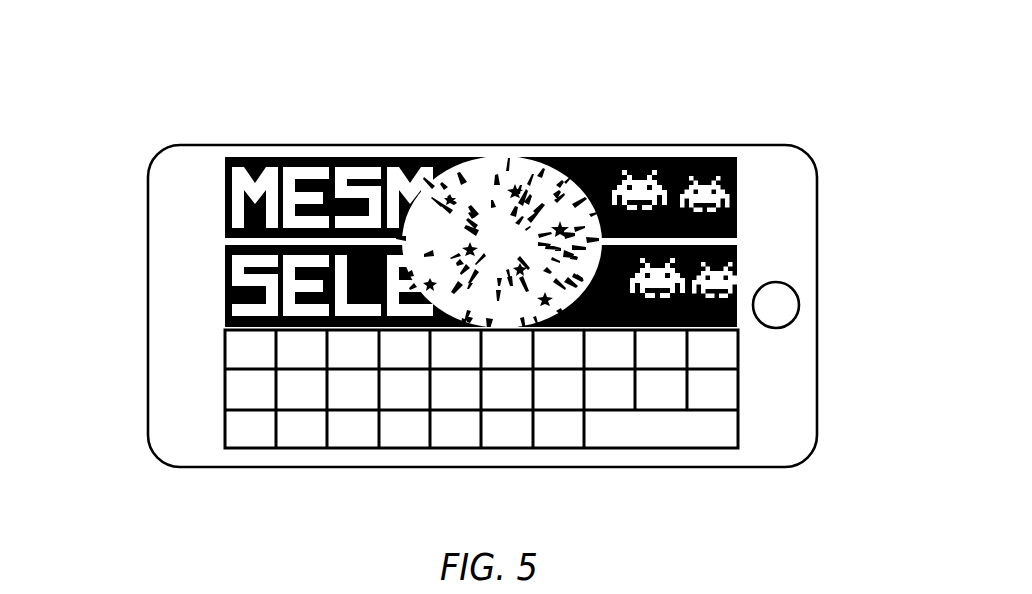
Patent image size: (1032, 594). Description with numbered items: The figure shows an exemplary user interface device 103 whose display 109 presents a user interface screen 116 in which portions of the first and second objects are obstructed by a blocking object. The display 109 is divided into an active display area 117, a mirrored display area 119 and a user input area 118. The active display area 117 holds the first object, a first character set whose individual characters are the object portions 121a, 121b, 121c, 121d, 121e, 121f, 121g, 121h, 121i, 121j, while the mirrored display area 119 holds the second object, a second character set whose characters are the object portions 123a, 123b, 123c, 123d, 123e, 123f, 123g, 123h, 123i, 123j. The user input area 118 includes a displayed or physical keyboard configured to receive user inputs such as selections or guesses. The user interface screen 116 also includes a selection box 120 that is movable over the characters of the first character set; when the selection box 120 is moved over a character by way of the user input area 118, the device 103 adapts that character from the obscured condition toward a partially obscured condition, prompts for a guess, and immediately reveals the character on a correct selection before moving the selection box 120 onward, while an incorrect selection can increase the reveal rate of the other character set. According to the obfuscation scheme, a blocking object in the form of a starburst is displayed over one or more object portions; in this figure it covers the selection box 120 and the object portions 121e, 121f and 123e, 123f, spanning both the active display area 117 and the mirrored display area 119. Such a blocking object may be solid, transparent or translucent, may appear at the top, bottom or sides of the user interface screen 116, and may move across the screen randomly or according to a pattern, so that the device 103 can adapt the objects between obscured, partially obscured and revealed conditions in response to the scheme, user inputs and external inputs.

The user interface device 103 is at (140, 83).
The display 109 is at (392, 223).
The user interface screen 116 is at (481, 242).
The active display area 117 is at (222, 280).
The user input area 118 is at (742, 388).
The mirrored display area 119 is at (222, 200).
The selection box 120 is at (379, 333).
The object portion 121a is at (270, 333).
The object portion 121b is at (320, 333).
The object portion 121c is at (362, 333).
The object portion 121d is at (417, 333).
The object portion 121e is at (473, 333).
The object portion 121f is at (529, 333).
The object portion 121g is at (572, 333).
The object portion 121h is at (626, 333).
The object portion 121i is at (680, 333).
The object portion 121j is at (726, 333).
The object portion 123a is at (258, 158).
The object portion 123b is at (313, 158).
The object portion 123c is at (360, 158).
The object portion 123d is at (415, 158).
The object portion 123e is at (460, 158).
The object portion 123f is at (515, 158).
The object portion 123g is at (572, 158).
The object portion 123h is at (620, 158).
The object portion 123i is at (670, 158).
The object portion 123j is at (718, 158).